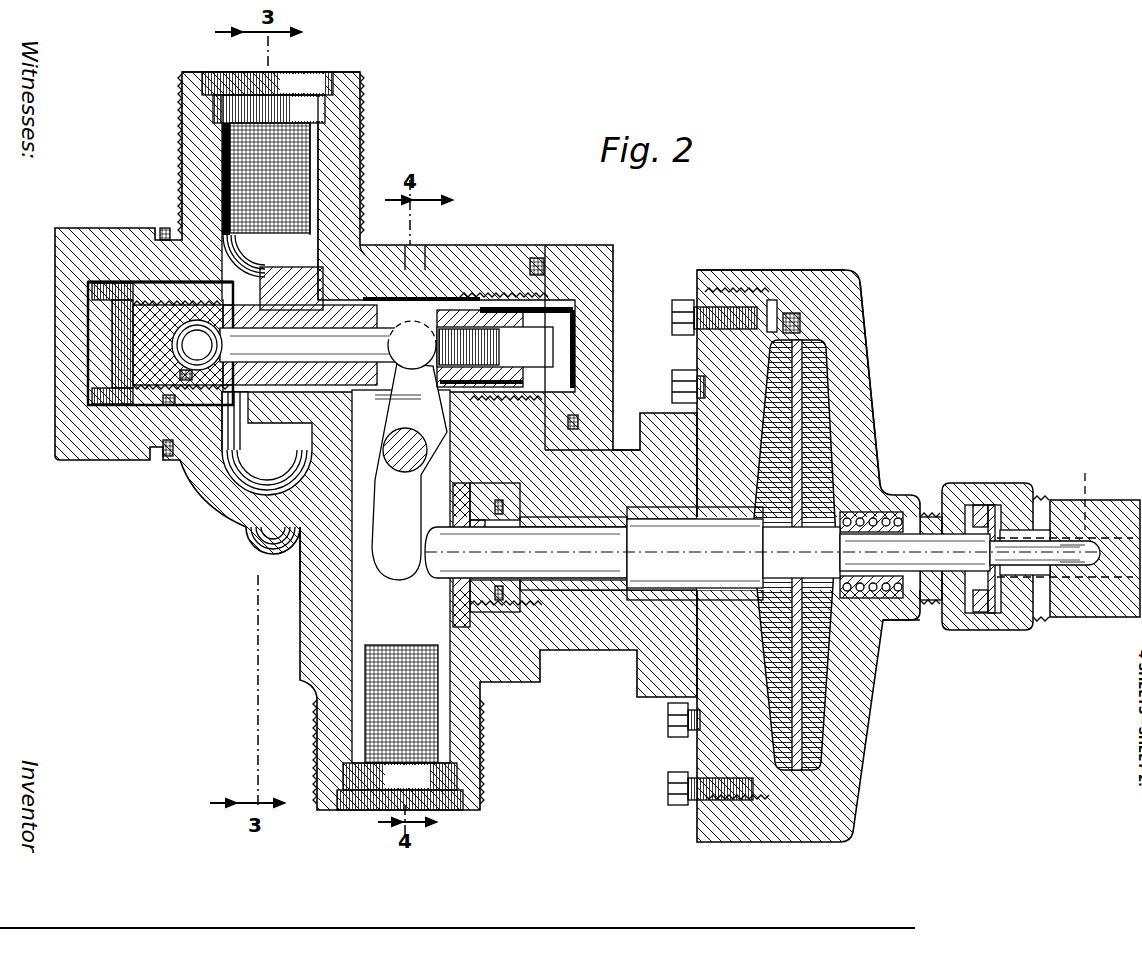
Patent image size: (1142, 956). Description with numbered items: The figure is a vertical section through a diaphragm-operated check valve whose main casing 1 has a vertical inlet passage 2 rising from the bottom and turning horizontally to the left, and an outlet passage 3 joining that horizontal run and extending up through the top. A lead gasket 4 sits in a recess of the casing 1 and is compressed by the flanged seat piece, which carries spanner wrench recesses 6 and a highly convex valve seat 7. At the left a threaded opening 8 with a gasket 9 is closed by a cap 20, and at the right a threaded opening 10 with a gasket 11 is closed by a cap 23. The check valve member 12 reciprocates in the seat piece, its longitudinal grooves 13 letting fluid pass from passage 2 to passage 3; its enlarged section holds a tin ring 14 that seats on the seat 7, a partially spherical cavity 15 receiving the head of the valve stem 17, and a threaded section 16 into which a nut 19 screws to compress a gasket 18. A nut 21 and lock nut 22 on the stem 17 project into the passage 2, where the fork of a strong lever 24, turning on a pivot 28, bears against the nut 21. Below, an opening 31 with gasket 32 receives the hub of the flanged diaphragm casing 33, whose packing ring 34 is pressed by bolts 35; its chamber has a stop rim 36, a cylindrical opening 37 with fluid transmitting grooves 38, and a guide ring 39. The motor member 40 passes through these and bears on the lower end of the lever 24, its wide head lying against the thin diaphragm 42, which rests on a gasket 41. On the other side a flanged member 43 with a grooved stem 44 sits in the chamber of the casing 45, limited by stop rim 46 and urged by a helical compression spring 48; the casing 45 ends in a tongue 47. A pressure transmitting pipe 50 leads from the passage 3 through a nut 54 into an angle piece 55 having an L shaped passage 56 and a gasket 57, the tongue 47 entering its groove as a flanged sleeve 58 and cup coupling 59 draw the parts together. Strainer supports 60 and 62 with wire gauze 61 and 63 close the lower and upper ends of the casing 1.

The main casing 1 is at (240, 510).
The inlet passage 2 is at (401, 576).
The outlet passage 3 is at (253, 253).
The gasket 4 is at (360, 250).
The spanner wrench recesses 6 is at (258, 270).
The valve seat 7 is at (222, 447).
The threaded opening 8 is at (234, 248).
The gasket 9 is at (168, 456).
The threaded opening 10 is at (510, 290).
The gasket 11 is at (537, 258).
The check valve member 12 is at (173, 403).
The longitudinal grooves 13 is at (417, 250).
The ring 14 is at (183, 267).
The partially spherical cavity 15 is at (190, 378).
The threaded section 16 is at (133, 408).
The valve stem 17 is at (283, 345).
The gasket 18 is at (88, 290).
The nut 19 is at (103, 367).
The cap 20 is at (63, 423).
The nut 21 is at (450, 303).
The lock nut 22 is at (547, 300).
The cap 23 is at (600, 343).
The lever 24 is at (409, 450).
The pivot 28 is at (300, 565).
The opening 31 is at (460, 617).
The gasket 32 is at (478, 622).
The flanged diaphragm casing 33 is at (712, 750).
The packing ring 34 is at (774, 300).
The bolts 35 is at (676, 380).
The stop rim 36 is at (760, 600).
The cylindrical opening 37 is at (607, 590).
The fluid transmitting grooves 38 is at (603, 510).
The guide ring 39 is at (480, 592).
The motor member 40 is at (762, 553).
The gasket 41 is at (797, 323).
The diaphragm 42 is at (800, 747).
The flanged member 43 is at (830, 407).
The fluid transmitting groove 44 is at (922, 557).
The casing 45 is at (736, 272).
The stop rim 46 is at (840, 607).
The tongue 47 is at (995, 538).
The helical compression spring 48 is at (877, 513).
The pressure transmitting pipe 50 is at (264, 550).
The nut 54 is at (1065, 513).
The angle piece 55 is at (1112, 500).
The L shaped passage 56 is at (1083, 560).
The gasket 57 is at (1007, 593).
The flanged sleeve 58 is at (978, 505).
The cup coupling 59 is at (985, 632).
The strainer support 60 is at (343, 760).
The wire gauze 61 is at (385, 683).
The strainer support 62 is at (322, 120).
The wire gauze 63 is at (277, 180).